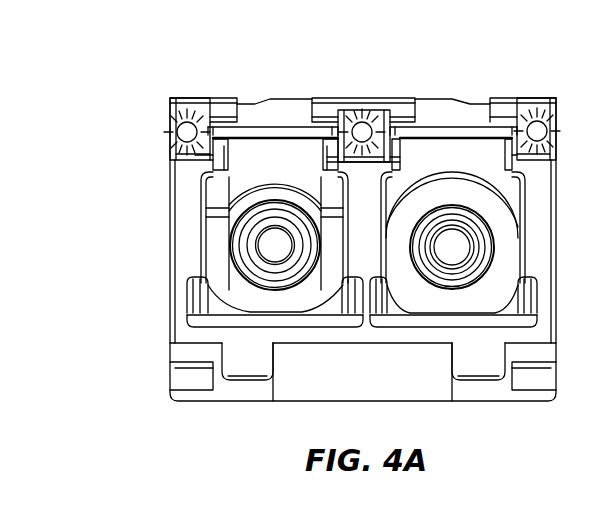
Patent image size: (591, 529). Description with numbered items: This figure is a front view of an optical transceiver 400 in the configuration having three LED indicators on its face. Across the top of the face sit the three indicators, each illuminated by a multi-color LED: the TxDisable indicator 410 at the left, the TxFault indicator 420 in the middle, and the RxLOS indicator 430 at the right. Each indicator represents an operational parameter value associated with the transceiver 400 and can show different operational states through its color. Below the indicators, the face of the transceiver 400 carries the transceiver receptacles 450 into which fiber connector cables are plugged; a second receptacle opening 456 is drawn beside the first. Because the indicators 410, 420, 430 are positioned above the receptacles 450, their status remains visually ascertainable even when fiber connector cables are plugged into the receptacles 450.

The transceiver 400 is at (139, 229).
The TxDisable indicator 410 is at (182, 115).
The TxFault indicator 420 is at (358, 114).
The RxLOS indicator 430 is at (532, 114).
The transceiver receptacle 450 is at (276, 262).
The second lens aperture 456 is at (452, 258).